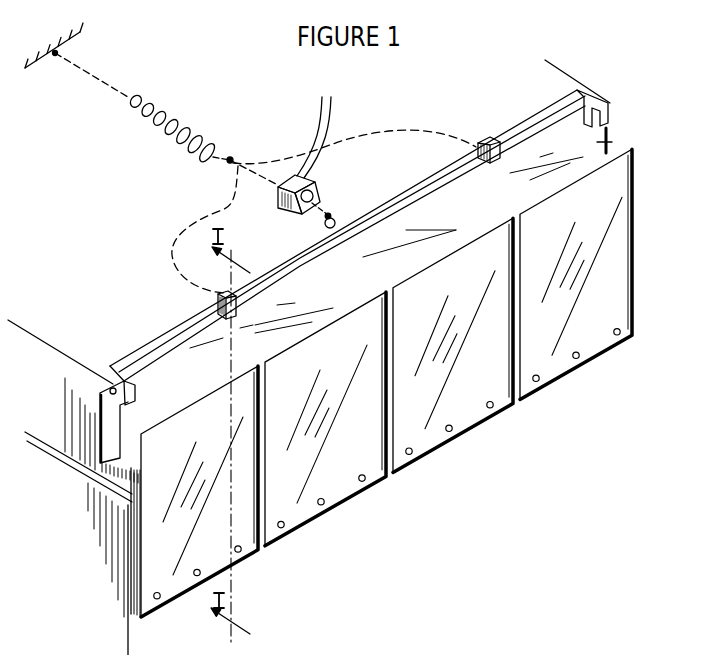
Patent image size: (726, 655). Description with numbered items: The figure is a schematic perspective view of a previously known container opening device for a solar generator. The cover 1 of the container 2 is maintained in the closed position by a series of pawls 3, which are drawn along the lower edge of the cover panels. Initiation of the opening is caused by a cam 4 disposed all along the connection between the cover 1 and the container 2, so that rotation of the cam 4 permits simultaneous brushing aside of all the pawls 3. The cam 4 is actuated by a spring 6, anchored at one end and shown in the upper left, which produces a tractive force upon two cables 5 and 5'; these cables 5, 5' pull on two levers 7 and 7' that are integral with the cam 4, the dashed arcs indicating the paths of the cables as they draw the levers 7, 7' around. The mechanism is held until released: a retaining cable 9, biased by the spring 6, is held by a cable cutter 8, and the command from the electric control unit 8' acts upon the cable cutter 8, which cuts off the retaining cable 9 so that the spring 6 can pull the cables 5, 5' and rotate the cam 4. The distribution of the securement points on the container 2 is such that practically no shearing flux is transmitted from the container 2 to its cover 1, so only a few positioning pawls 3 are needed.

The cover 1 is at (560, 78).
The container 2 is at (118, 654).
The pawls 3 is at (243, 548).
The cam 4 is at (612, 141).
The cable 5 is at (195, 229).
The cable 5' is at (354, 122).
The spring 6 is at (206, 129).
The lever 7 is at (233, 324).
The lever 7' is at (498, 171).
The cable cutter 8 is at (323, 191).
The electric control unit 8' is at (318, 123).
The retaining cable 9 is at (263, 185).